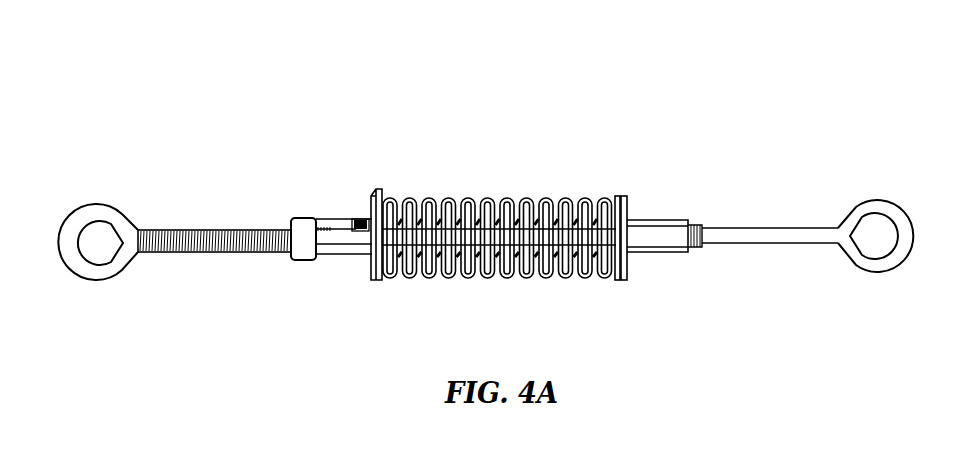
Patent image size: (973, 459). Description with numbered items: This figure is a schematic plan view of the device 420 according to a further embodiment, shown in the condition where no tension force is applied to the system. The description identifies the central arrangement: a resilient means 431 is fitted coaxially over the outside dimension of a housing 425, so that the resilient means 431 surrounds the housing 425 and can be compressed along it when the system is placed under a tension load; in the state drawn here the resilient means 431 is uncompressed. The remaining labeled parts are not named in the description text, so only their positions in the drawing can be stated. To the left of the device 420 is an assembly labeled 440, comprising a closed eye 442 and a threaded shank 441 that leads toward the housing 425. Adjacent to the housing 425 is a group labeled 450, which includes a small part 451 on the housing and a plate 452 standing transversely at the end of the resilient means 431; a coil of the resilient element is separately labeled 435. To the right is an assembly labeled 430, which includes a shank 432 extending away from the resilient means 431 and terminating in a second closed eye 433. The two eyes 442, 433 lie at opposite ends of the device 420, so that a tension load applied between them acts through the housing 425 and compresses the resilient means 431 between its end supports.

The first eye bolt assembly 440 is at (345, 104).
The eye of first eye bolt 442 is at (98, 272).
The threaded shank of first eye bolt 441 is at (192, 253).
The stopper assembly 450 is at (377, 192).
The housing 425 is at (322, 254).
The retaining pin 451 is at (362, 219).
The stopper plate 452 is at (371, 272).
The device 420 is at (492, 104).
The spring coil 435 is at (527, 201).
The second eye bolt assembly 430 is at (602, 104).
The resilient means 431 is at (598, 201).
The shank of second eye bolt 432 is at (790, 243).
The eye of second eye bolt 433 is at (880, 265).